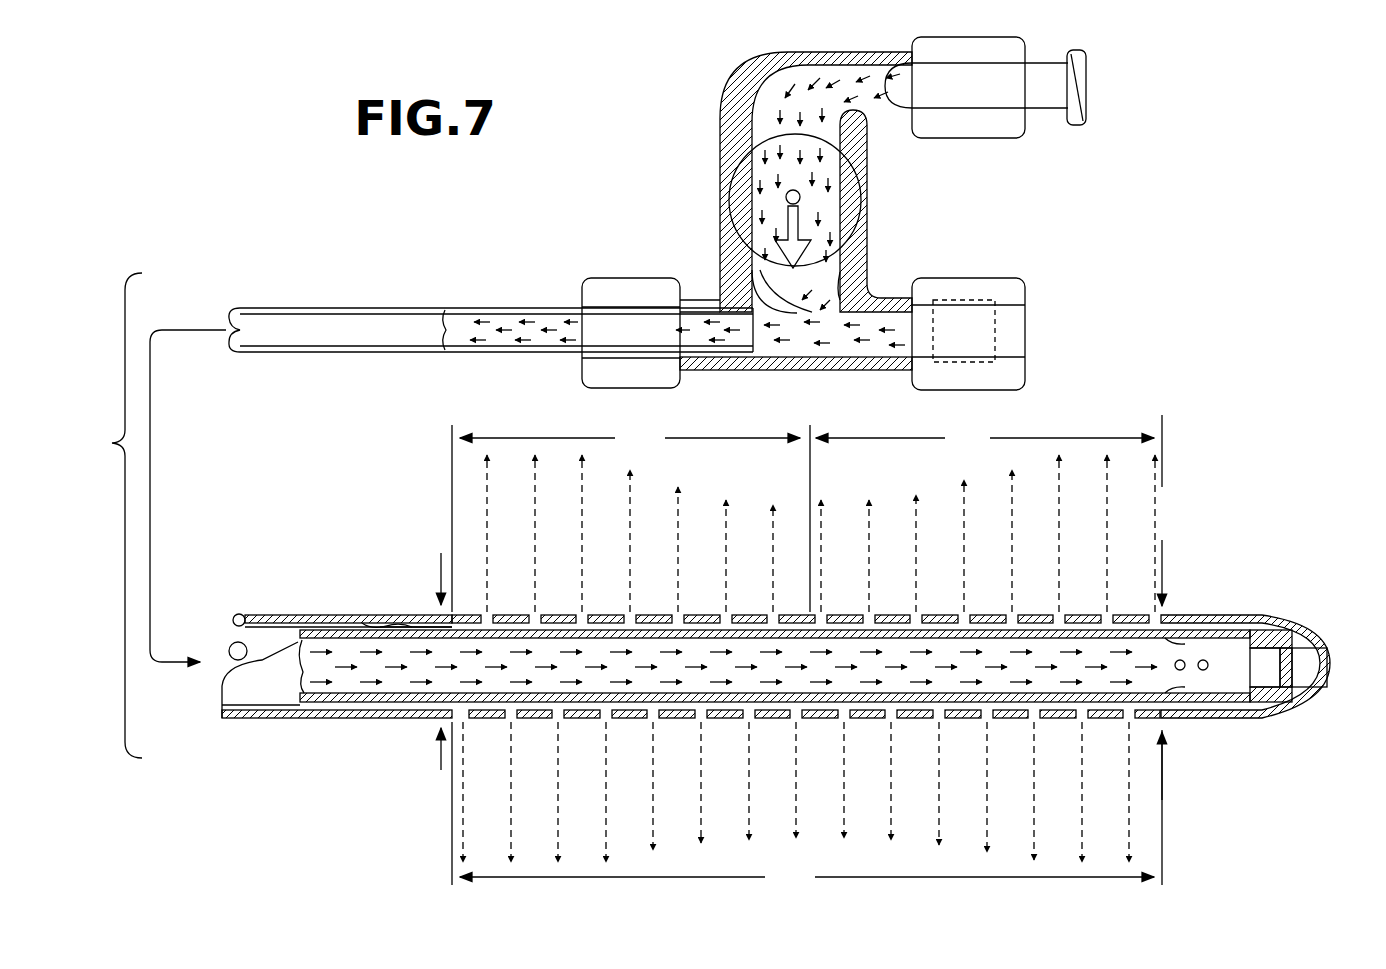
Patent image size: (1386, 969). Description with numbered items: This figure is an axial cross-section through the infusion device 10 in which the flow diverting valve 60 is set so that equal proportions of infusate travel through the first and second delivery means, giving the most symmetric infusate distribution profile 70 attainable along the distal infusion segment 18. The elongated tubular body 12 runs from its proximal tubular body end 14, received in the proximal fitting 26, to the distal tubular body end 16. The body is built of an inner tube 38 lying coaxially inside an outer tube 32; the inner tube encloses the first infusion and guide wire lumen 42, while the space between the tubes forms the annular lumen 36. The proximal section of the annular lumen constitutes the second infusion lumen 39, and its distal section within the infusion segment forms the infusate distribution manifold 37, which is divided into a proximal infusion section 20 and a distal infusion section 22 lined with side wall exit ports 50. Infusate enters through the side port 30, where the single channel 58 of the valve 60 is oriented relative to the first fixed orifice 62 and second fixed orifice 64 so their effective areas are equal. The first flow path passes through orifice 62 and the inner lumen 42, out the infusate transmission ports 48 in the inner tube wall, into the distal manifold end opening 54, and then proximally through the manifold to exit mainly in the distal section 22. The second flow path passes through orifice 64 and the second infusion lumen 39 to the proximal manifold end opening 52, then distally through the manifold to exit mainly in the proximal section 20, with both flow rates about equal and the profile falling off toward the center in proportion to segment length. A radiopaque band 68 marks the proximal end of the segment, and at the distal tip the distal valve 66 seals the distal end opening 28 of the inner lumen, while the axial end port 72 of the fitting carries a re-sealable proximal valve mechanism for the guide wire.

The infusion device 10 is at (386, 245).
The elongated tubular body 12 is at (271, 352).
The proximal tubular body end 14 is at (492, 300).
The distal tubular body end 16 is at (1293, 588).
The distal infusion segment 18 is at (807, 807).
The proximal infusion section 20 is at (631, 518).
The distal infusion section 22 is at (989, 451).
The proximal fitting 26 is at (886, 284).
The distal end opening 28 is at (1330, 672).
The side port 30 is at (962, 134).
The outer tube 32 is at (288, 617).
The annular lumen 36 is at (233, 631).
The infusate distribution manifold 37 is at (662, 625).
The inner tube 38 is at (348, 712).
The second infusion lumen 39 is at (531, 318).
The first infusion and guide wire lumen 42 is at (447, 328).
The infusate transmission ports 48 is at (1198, 636).
The side wall exit ports 50 is at (797, 720).
The proximal manifold end opening 52 is at (441, 553).
The distal manifold end opening 54 is at (1162, 562).
The single channel 58 is at (776, 183).
The flow diverting valve 60 is at (750, 176).
The first fixed orifice 62 is at (733, 328).
The second fixed orifice 64 is at (752, 292).
The distal valve 66 is at (1300, 664).
The radiopaque band 68 is at (402, 621).
The infusate distribution profile 70 is at (882, 483).
The axial end port 72 is at (985, 338).